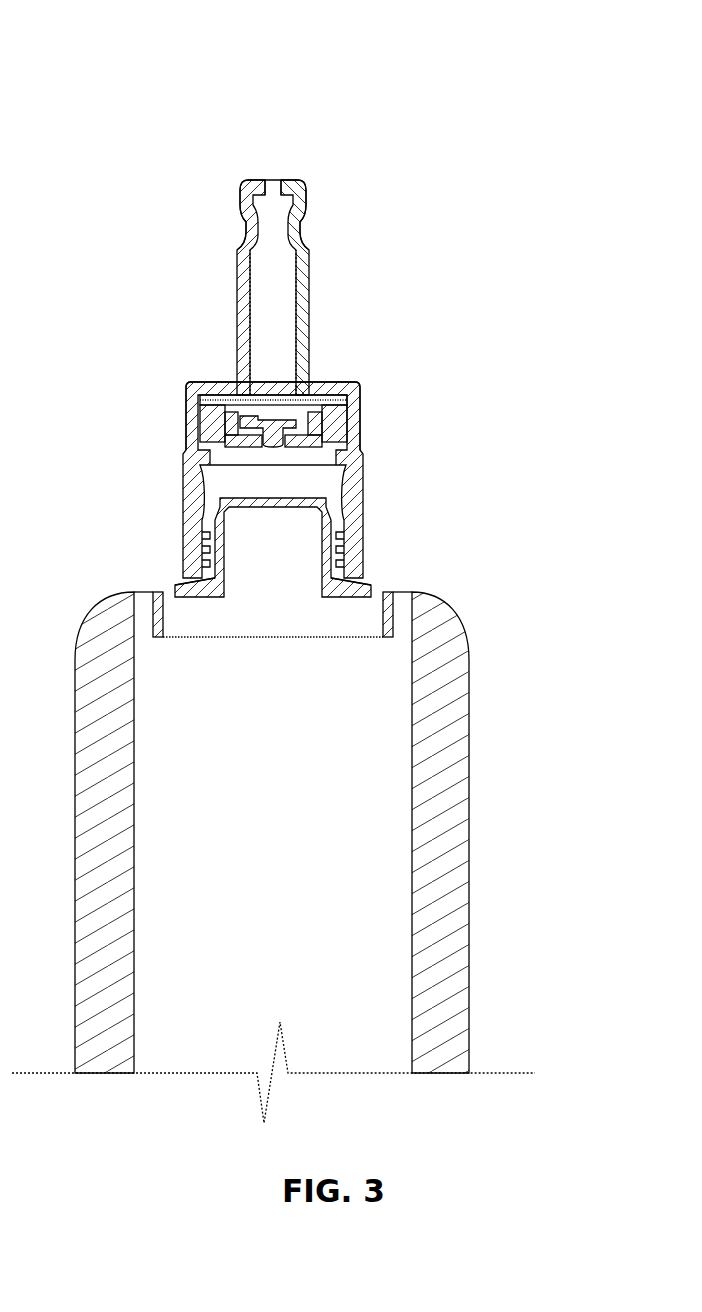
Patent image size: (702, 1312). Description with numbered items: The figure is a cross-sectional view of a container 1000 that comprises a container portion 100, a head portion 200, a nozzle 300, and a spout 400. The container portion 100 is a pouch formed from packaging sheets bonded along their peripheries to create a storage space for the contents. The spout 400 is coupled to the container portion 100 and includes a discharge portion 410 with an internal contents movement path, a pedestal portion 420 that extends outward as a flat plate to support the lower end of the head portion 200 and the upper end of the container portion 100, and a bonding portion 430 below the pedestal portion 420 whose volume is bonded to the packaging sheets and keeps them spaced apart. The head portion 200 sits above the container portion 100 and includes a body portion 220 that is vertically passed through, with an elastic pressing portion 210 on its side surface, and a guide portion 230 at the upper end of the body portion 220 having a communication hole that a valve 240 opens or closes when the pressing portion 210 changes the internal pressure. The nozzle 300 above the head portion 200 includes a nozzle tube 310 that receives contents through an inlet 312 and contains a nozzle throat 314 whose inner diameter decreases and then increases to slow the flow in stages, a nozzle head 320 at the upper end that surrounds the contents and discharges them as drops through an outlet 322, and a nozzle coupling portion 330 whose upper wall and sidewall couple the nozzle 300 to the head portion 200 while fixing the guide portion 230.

The container 1000 is at (568, 50).
The container portion 100 is at (470, 893).
The head portion 200 is at (392, 462).
The pressing portion 210 is at (190, 500).
The body portion 220 is at (185, 568).
The guide portion 230 is at (208, 448).
The valve 240 is at (313, 408).
The nozzle 300 is at (213, 168).
The nozzle tube 310 is at (310, 320).
The inlet 312 is at (273, 382).
The nozzle throat 314 is at (243, 230).
The nozzle head 320 is at (305, 200).
The outlet 322 is at (273, 188).
The nozzle coupling portion 330 is at (207, 380).
The spout 400 is at (407, 540).
The discharge portion 410 is at (355, 540).
The pedestal portion 420 is at (178, 590).
The bonding portion 430 is at (385, 630).